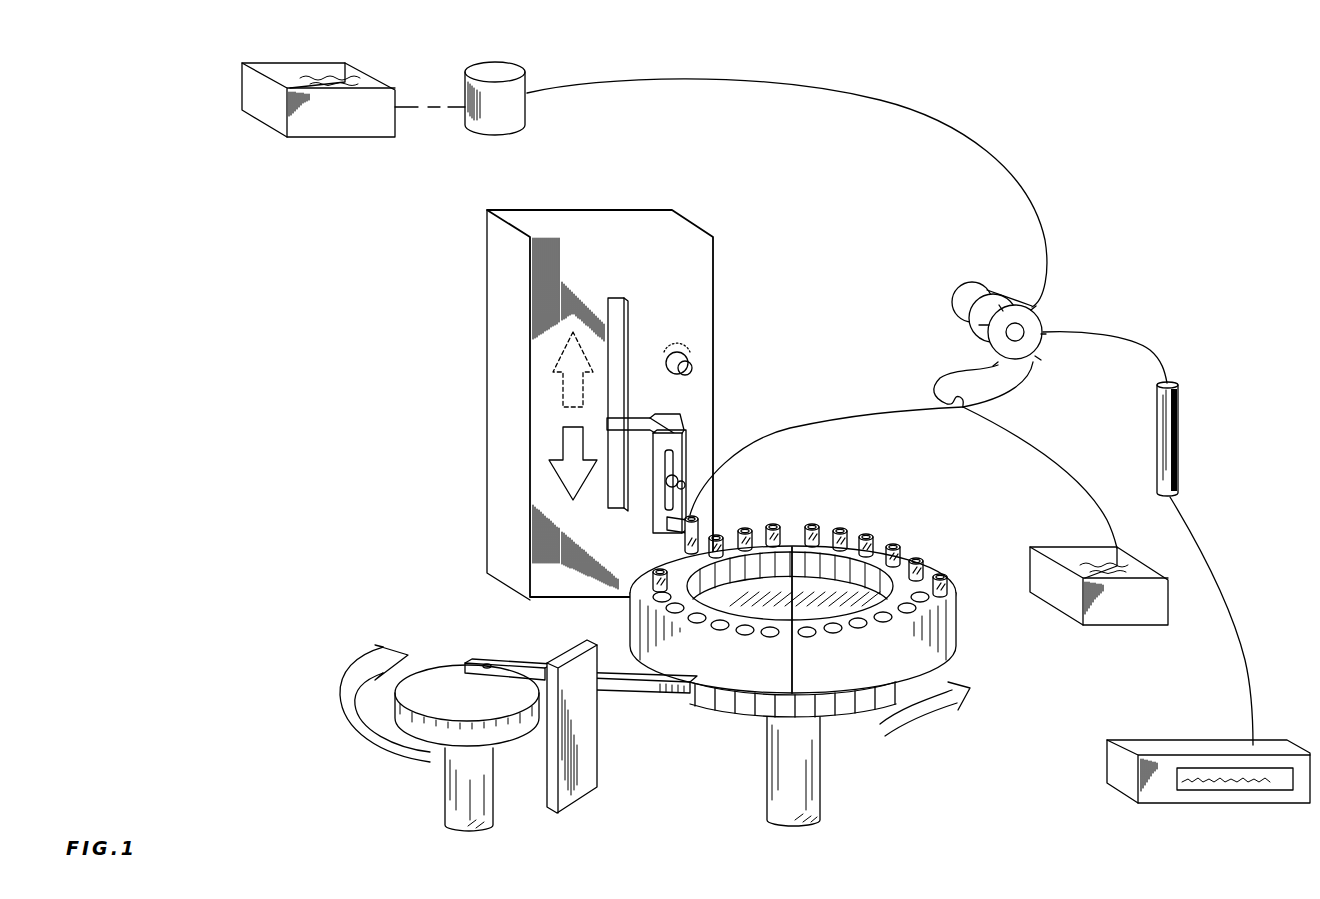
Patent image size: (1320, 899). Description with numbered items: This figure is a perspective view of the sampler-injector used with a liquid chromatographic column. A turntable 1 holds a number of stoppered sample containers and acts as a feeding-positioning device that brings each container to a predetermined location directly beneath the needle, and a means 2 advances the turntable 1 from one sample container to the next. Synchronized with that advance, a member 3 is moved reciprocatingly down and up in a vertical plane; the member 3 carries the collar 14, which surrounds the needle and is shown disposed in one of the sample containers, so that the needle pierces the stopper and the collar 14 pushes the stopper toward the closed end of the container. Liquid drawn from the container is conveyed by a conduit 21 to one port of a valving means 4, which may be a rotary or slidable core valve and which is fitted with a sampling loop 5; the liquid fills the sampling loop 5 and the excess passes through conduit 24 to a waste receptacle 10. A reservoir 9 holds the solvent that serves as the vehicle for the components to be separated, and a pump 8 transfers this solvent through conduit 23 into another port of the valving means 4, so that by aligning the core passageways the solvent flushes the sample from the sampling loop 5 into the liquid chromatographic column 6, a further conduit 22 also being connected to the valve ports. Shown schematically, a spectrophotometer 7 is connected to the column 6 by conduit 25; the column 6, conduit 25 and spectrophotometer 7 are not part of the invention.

The turntable 1 is at (935, 648).
The means for advancing the turntable 2 is at (612, 700).
The member 3 is at (682, 447).
The valving means 4 is at (1007, 297).
The sampling loop 5 is at (953, 297).
The liquid chromatographic column 6 is at (1180, 437).
The spectrophotometer 7 is at (1158, 745).
The pump 8 is at (520, 72).
The reservoir 9 is at (317, 68).
The waste receptacle 10 is at (1137, 612).
The collar 14 is at (700, 522).
The conduit 21 is at (827, 420).
The conduit 22 is at (1147, 347).
The conduit 23 is at (825, 90).
The conduit 24 is at (1062, 468).
The conduit 25 is at (1223, 607).